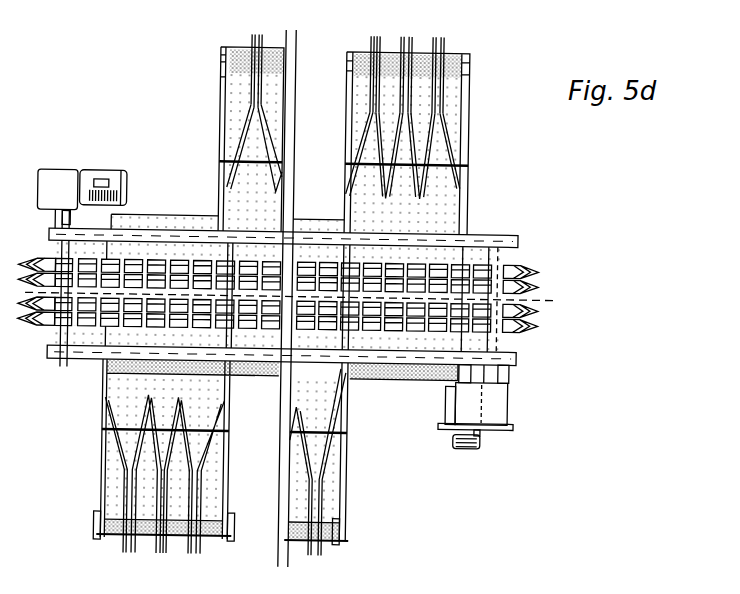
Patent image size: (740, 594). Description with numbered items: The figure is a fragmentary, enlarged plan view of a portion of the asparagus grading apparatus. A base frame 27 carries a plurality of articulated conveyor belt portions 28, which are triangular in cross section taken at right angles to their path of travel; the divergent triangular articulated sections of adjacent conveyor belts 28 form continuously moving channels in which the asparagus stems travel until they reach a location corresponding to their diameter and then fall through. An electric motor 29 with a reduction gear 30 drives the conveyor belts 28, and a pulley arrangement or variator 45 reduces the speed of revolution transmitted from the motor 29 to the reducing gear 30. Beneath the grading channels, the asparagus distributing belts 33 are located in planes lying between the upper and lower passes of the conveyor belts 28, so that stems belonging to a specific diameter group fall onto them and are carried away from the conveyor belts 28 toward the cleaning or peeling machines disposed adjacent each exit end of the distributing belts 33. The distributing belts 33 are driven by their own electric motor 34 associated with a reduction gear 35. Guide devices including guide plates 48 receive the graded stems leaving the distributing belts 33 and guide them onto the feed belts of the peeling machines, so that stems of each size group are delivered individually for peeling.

The base frame 27 is at (349, 397).
The conveyor belts 28 is at (530, 289).
The electric motor 29 is at (463, 394).
The reduction gear 30 is at (510, 425).
The asparagus distributing belts 33 is at (442, 213).
The electric motor 34 is at (110, 173).
The reduction gear 35 is at (51, 182).
The pulley arrangement or variator 45 is at (470, 440).
The guide plates 48 is at (405, 123).